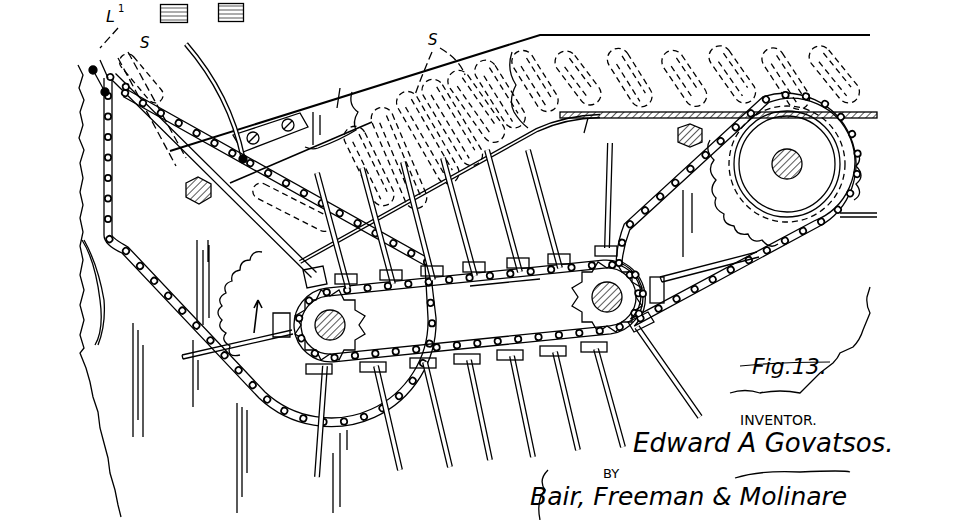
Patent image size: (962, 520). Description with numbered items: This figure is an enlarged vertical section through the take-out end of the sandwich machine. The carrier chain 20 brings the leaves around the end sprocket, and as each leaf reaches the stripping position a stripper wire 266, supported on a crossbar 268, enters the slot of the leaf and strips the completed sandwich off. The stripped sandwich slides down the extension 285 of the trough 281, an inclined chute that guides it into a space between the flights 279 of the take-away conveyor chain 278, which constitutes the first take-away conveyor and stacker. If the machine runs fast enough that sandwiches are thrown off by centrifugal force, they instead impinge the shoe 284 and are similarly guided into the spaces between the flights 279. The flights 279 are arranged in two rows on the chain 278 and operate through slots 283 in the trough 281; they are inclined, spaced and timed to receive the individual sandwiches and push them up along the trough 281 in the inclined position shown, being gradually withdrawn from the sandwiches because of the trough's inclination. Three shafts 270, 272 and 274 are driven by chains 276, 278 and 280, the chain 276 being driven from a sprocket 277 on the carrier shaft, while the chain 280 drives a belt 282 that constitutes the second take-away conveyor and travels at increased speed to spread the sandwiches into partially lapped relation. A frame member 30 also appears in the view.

The chain 20 is at (99, 291).
The frame member 30 is at (110, 277).
The stripper wire 266 is at (160, 100).
The crossbar 268 is at (186, 192).
The shaft 270 is at (366, 320).
The shaft 272 is at (650, 326).
The shaft 274 is at (770, 177).
The chain 276 is at (180, 310).
The sprocket 277 is at (170, 148).
The take-away conveyor chain 278 is at (462, 292).
The flights 279 is at (606, 190).
The chain 280 is at (727, 278).
The trough 281 is at (425, 200).
The belt 282 is at (620, 3).
The slots 283 is at (470, 180).
The shoe 284 is at (226, 98).
The extension 285 is at (216, 222).